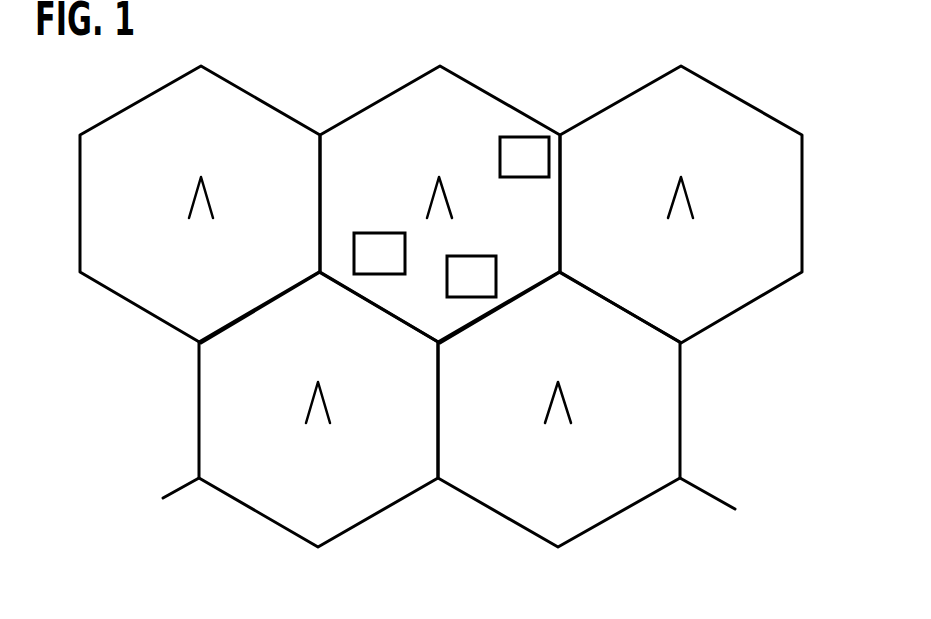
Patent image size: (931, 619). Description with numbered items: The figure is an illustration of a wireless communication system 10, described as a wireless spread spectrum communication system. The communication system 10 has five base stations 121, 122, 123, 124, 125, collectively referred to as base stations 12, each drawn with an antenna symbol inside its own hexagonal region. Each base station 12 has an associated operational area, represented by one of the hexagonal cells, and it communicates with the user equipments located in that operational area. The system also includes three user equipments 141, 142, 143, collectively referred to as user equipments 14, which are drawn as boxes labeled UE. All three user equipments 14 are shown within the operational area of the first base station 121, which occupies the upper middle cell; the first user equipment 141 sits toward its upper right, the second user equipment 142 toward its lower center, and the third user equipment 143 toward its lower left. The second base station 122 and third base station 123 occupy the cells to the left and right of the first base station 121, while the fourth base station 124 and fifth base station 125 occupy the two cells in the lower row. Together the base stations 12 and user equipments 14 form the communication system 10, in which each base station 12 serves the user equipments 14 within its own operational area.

The wireless communication system 10 is at (698, 53).
The base station 12 is at (441, 306).
The base station 121 is at (440, 204).
The base station 122 is at (200, 204).
The base station 123 is at (681, 204).
The base station 124 is at (300, 409).
The base station 125 is at (586, 409).
The user equipment 14 is at (442, 205).
The user equipment 141 is at (498, 145).
The user equipment 142 is at (488, 261).
The user equipment 143 is at (370, 231).